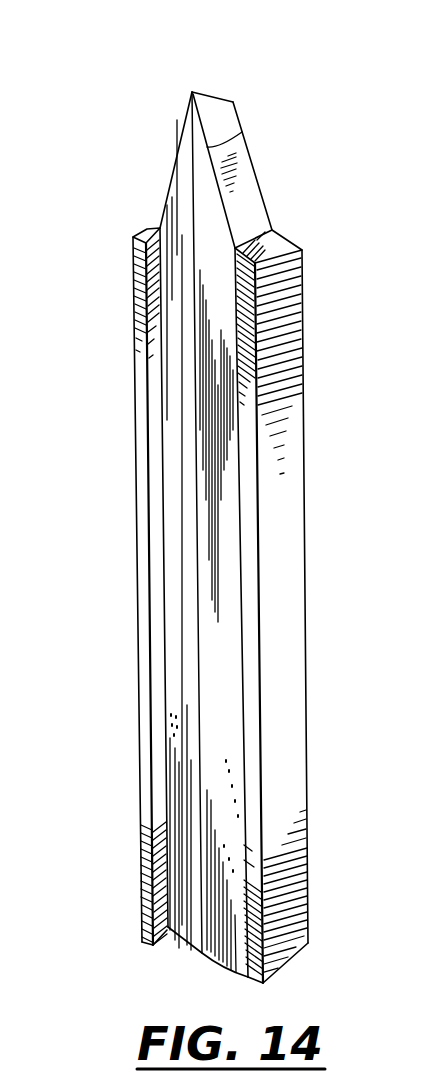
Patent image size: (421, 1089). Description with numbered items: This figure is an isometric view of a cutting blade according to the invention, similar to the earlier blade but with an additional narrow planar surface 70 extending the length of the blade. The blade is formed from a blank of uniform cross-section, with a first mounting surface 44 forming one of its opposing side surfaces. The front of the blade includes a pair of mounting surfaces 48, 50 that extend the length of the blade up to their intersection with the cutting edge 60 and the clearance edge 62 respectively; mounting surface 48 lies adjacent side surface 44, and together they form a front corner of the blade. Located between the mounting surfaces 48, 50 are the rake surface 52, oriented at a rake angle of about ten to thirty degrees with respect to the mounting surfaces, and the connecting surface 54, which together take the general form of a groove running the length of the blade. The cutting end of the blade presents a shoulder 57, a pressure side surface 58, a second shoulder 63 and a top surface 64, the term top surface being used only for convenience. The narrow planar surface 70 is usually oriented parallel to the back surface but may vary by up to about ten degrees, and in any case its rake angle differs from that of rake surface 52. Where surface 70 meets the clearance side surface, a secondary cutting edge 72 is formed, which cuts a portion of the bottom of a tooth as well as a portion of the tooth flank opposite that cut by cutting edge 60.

The first mounting surface 44 is at (280, 437).
The mounting surface 48 is at (247, 370).
The mounting surface 50 is at (137, 360).
The rake surface 52 is at (170, 588).
The connecting surface 54 is at (152, 477).
The shoulder 57 is at (273, 243).
The pressure side surface 58 is at (245, 182).
The cutting edge 60 is at (243, 132).
The clearance edge 62 is at (167, 183).
The shoulder 63 is at (150, 232).
The top surface 64 is at (192, 92).
The narrow planar surface 70 is at (190, 698).
The secondary cutting edge 72 is at (182, 117).